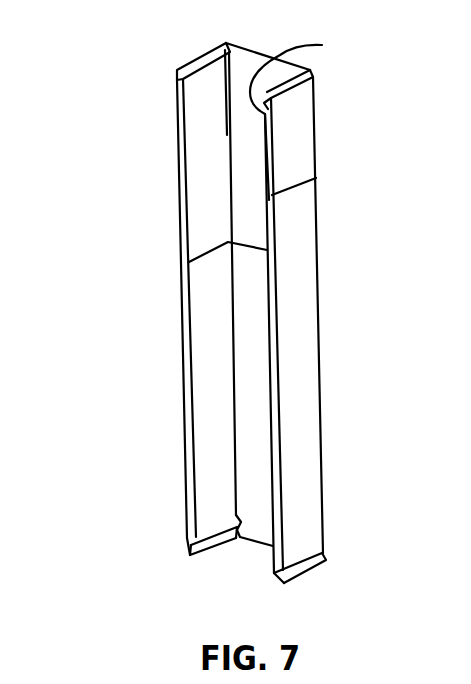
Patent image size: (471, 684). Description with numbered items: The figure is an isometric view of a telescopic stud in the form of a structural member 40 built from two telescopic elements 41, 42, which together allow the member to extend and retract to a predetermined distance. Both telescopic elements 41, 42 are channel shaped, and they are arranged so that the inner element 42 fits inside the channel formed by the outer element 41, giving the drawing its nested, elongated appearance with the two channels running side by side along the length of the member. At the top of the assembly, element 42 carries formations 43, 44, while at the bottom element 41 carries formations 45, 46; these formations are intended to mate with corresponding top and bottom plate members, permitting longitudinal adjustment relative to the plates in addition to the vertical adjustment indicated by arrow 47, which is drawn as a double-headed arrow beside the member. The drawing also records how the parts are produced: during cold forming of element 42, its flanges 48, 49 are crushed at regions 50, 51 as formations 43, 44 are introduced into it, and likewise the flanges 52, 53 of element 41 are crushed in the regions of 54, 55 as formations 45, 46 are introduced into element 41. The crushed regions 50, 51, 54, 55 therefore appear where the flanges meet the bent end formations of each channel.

The structural member 40 is at (163, 340).
The telescopic element 41 is at (305, 275).
The telescopic element 42 is at (295, 166).
The formation 43 is at (175, 76).
The formation 44 is at (312, 76).
The formation 45 is at (188, 545).
The formation 46 is at (328, 554).
The arrow 47 is at (88, 75).
The flange 48 is at (188, 145).
The flange 49 is at (265, 145).
The crushed region 50 is at (196, 82).
The crushed region 51 is at (302, 74).
The flange 52 is at (192, 448).
The flange 53 is at (273, 400).
The crushed region 54 is at (225, 545).
The crushed region 55 is at (277, 567).